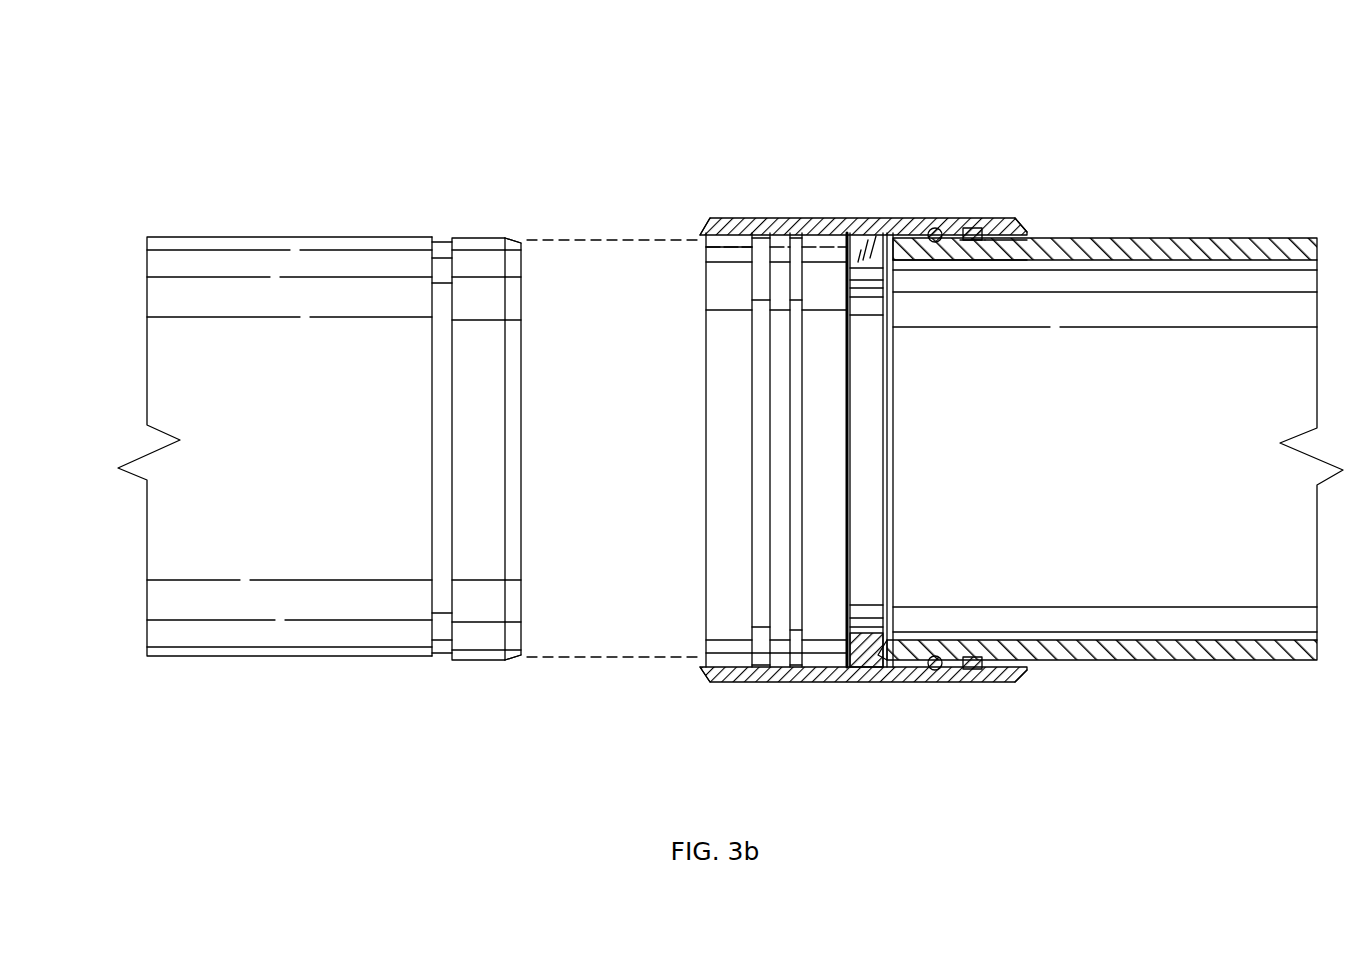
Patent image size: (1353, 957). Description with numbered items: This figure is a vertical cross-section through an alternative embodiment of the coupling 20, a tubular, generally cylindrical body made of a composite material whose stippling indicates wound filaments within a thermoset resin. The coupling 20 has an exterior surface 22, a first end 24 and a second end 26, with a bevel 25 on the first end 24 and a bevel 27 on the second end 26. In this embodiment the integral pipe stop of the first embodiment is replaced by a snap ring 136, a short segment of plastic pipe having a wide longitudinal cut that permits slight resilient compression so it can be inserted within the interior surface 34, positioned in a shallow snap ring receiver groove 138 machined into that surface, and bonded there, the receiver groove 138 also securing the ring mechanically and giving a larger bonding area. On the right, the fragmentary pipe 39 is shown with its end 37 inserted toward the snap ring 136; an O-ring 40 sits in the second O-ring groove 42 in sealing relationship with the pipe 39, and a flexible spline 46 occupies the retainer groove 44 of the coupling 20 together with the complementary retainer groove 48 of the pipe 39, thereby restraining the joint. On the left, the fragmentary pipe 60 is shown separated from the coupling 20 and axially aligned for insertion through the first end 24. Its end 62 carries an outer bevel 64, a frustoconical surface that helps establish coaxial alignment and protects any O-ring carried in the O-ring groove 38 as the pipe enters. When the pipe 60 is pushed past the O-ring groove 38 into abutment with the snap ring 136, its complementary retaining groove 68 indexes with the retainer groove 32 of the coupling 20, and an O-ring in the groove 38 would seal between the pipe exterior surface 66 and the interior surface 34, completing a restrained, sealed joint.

The coupling 20 is at (863, 402).
The exterior surface 22 is at (934, 222).
The first end 24 is at (708, 226).
The bevel 25 is at (712, 680).
The second end 26 is at (1035, 229).
The bevel 27 is at (1022, 673).
The retainer groove 32 is at (765, 234).
The interior surface 34 is at (713, 235).
The end of pipe 39 37 is at (892, 422).
The O-ring groove 38 is at (807, 234).
The pipe 39 is at (1173, 237).
The O-ring 40 is at (938, 230).
The second O-ring groove 42 is at (945, 231).
The retainer groove 44 is at (995, 230).
The flexible spline 46 is at (977, 230).
The complementary retainer groove 48 is at (990, 252).
The pipe 60 is at (318, 236).
The end of pipe 60 62 is at (522, 402).
The outer bevel 64 is at (513, 661).
The pipe exterior surface 66 is at (472, 662).
The complementary retaining groove 68 is at (442, 656).
The snap ring 136 is at (858, 233).
The snap ring receiver groove 138 is at (846, 400).